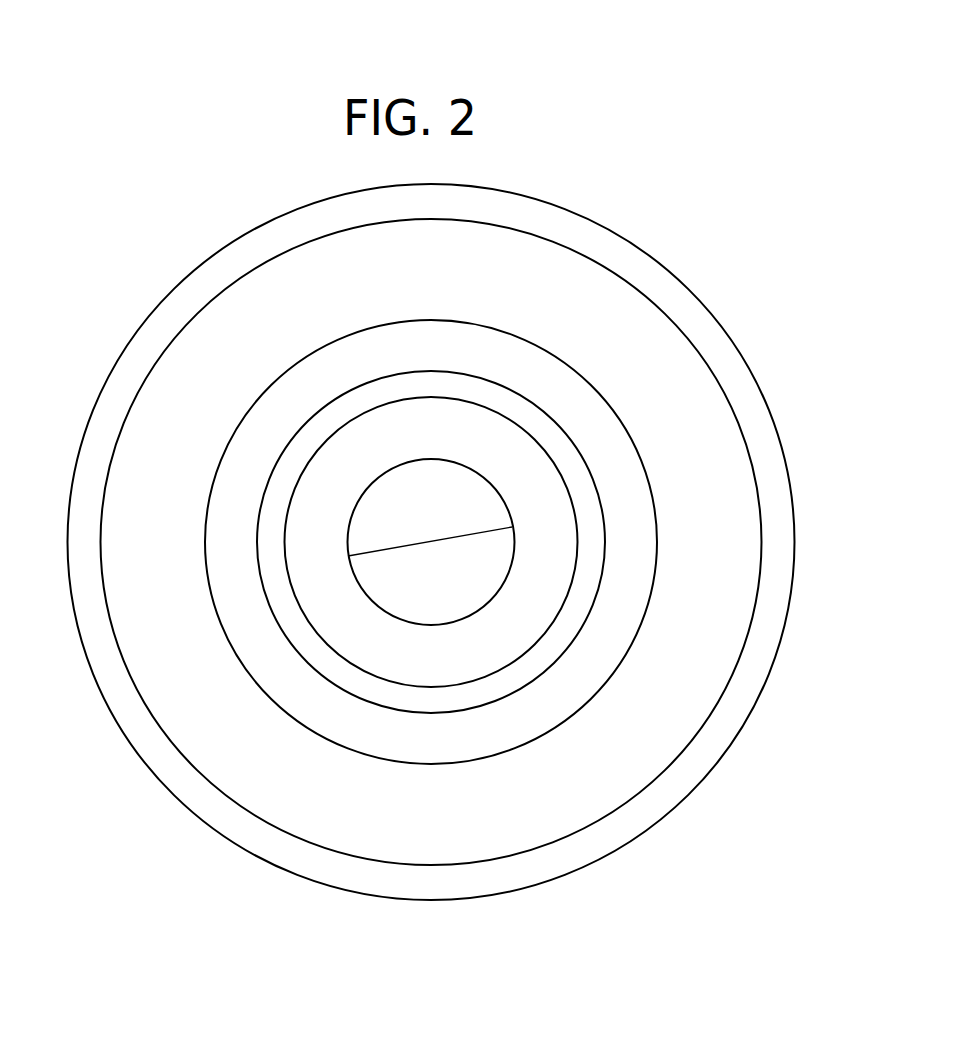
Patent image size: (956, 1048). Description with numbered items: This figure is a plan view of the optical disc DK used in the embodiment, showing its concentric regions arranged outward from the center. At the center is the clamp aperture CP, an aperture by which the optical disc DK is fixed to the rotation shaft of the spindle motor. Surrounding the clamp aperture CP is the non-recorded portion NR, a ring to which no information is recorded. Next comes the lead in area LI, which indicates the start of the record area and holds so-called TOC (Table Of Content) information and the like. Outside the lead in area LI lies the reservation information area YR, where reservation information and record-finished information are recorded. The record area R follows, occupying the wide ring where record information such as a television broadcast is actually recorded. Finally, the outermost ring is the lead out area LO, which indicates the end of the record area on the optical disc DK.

The optical disc DK is at (575, 885).
The clamp aperture CP is at (512, 527).
The non-recorded portion NR is at (431, 397).
The lead in area LI is at (406, 664).
The reservation information area YR is at (549, 641).
The record area R is at (431, 764).
The lead out area LO is at (294, 811).